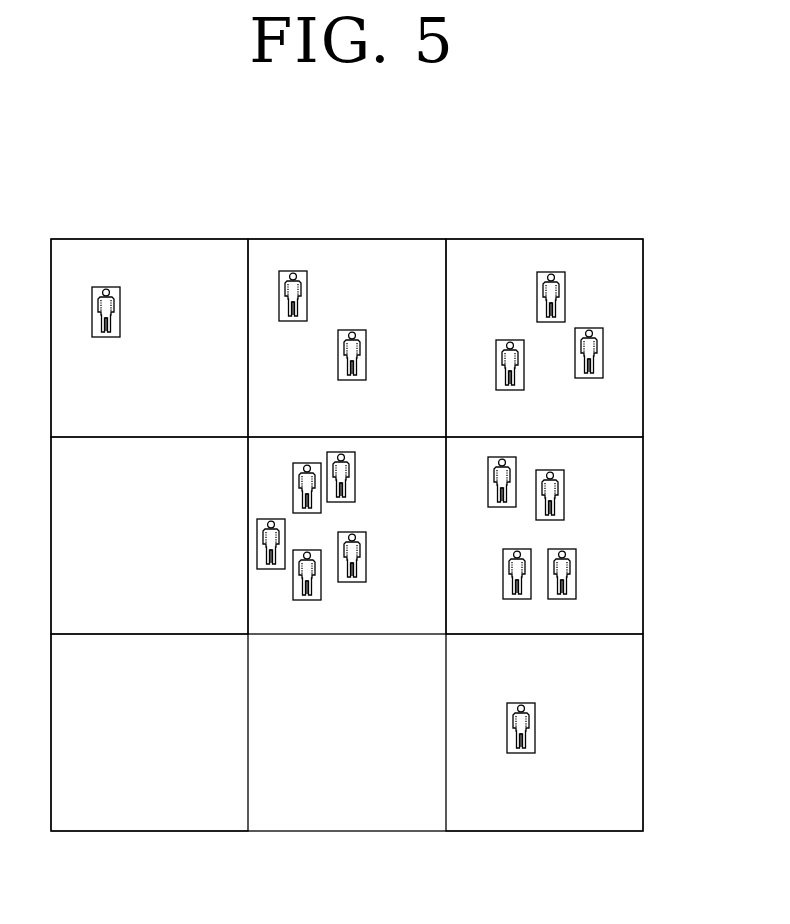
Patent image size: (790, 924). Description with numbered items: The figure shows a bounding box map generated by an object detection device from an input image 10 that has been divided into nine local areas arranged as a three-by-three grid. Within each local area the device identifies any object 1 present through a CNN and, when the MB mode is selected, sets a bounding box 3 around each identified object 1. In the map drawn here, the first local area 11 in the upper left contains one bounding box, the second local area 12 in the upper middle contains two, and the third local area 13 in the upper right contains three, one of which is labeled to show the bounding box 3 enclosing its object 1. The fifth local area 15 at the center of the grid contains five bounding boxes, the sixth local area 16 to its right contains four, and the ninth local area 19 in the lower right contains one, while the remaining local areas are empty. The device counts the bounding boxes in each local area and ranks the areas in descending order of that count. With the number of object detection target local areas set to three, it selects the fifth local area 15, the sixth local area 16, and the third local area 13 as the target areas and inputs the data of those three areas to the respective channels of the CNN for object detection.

The input image 10 is at (373, 147).
The first local area 11 is at (153, 250).
The second local area 12 is at (351, 250).
The third local area 13 is at (549, 250).
The fifth local area 15 is at (349, 613).
The sixth local area 16 is at (632, 538).
The ninth local area 19 is at (632, 735).
The object 1 is at (595, 347).
The bounding box 3 is at (596, 331).